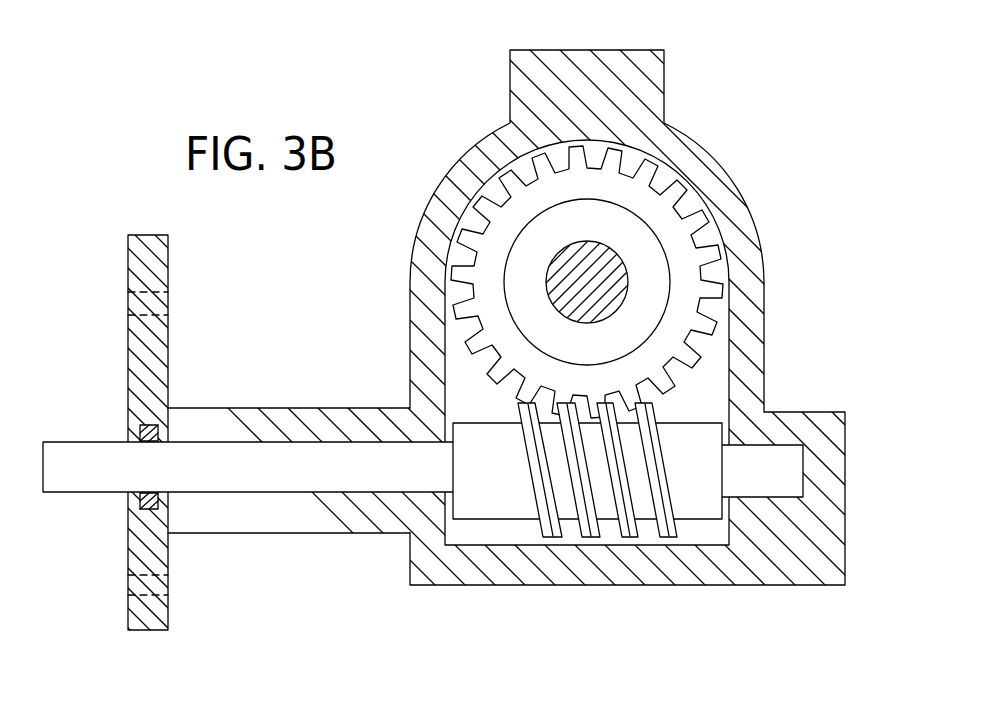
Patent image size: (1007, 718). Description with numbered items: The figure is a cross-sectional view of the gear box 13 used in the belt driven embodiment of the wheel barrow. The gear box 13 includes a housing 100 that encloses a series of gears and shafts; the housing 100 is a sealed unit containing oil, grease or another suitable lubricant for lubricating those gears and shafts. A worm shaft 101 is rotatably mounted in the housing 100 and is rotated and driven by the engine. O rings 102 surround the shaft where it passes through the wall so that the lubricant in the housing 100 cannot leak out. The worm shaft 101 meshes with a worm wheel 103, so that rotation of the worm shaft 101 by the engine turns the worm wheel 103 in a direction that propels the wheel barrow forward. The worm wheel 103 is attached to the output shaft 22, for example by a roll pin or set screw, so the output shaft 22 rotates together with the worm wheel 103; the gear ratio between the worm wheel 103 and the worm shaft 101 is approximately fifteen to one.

The gear box 13 is at (270, 408).
The output shaft 22 is at (568, 258).
The housing 100 is at (652, 92).
The worm shaft 101 is at (782, 457).
The O rings 102 is at (168, 425).
The worm wheel 103 is at (710, 222).